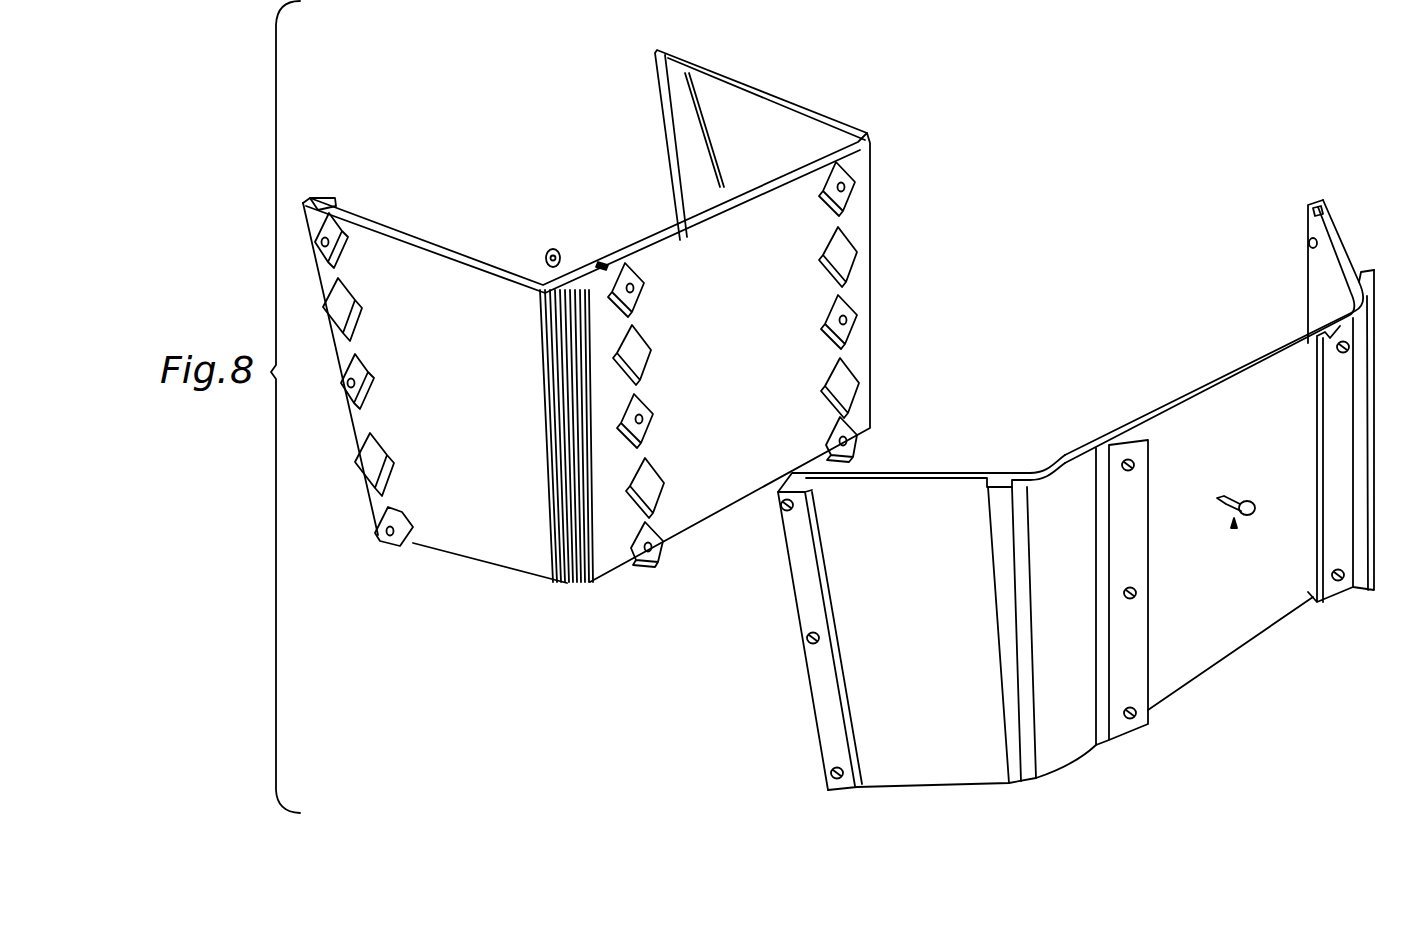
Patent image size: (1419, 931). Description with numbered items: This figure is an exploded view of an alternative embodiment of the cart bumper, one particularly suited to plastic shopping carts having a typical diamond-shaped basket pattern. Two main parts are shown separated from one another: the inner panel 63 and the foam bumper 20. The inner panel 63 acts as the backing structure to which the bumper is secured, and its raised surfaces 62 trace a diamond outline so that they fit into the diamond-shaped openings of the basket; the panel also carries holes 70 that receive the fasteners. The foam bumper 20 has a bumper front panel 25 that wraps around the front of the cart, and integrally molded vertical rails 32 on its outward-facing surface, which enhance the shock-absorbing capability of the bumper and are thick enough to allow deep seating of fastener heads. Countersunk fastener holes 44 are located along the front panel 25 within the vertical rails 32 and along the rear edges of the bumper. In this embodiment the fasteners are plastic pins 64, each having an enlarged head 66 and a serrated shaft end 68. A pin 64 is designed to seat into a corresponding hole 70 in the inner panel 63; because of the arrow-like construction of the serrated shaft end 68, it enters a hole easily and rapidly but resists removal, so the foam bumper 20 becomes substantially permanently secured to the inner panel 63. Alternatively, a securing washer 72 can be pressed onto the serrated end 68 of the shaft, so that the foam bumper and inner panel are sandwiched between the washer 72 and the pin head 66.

The foam bumper 20 is at (1246, 618).
The bumper front panel 25 is at (1232, 372).
The vertical rails 32 is at (1345, 552).
The countersunk holes 44 is at (832, 770).
The raised surfaces 62 is at (357, 355).
The inner panel 63 is at (747, 388).
The plastic pins 64 is at (1234, 520).
The enlarged head 66 is at (1252, 504).
The serrated shaft end 68 is at (1221, 495).
The holes 70 is at (327, 240).
The securing washer 72 is at (553, 252).